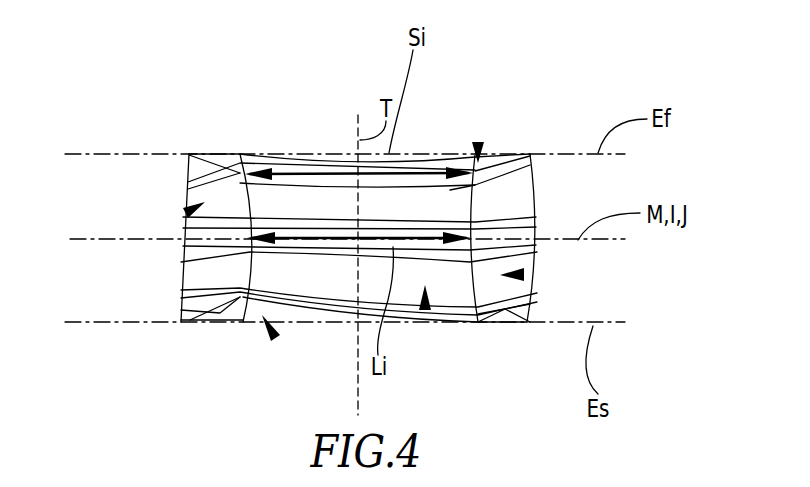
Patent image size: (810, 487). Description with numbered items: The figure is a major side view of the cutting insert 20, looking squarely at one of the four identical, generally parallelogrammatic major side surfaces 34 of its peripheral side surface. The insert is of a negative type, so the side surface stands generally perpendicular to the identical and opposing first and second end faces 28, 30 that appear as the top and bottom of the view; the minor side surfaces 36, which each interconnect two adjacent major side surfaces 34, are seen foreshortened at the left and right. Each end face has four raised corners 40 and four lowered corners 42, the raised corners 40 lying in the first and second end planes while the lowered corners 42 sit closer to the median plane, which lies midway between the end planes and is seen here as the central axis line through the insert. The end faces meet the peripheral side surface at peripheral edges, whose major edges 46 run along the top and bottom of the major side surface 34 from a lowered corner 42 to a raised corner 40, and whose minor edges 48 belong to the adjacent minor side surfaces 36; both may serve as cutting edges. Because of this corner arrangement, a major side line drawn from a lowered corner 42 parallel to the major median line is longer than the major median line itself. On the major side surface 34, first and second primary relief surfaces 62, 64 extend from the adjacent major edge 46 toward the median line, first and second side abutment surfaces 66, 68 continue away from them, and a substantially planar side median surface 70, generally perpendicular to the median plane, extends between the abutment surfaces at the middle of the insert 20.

The cutting insert 20 is at (632, 62).
The first end face 28 is at (478, 142).
The second end face 30 is at (275, 338).
The major side surface 34 is at (425, 308).
The minor side surface 36 is at (186, 212).
The raised corner 40 is at (190, 152).
The lowered corner 42 is at (187, 170).
The major edge 46 is at (305, 153).
The minor edge 48 is at (203, 152).
The first primary relief surface 62 is at (263, 152).
The second primary relief surface 64 is at (298, 312).
The first side abutment surface 66 is at (340, 153).
The second side abutment surface 68 is at (325, 273).
The side median surface 70 is at (300, 245).